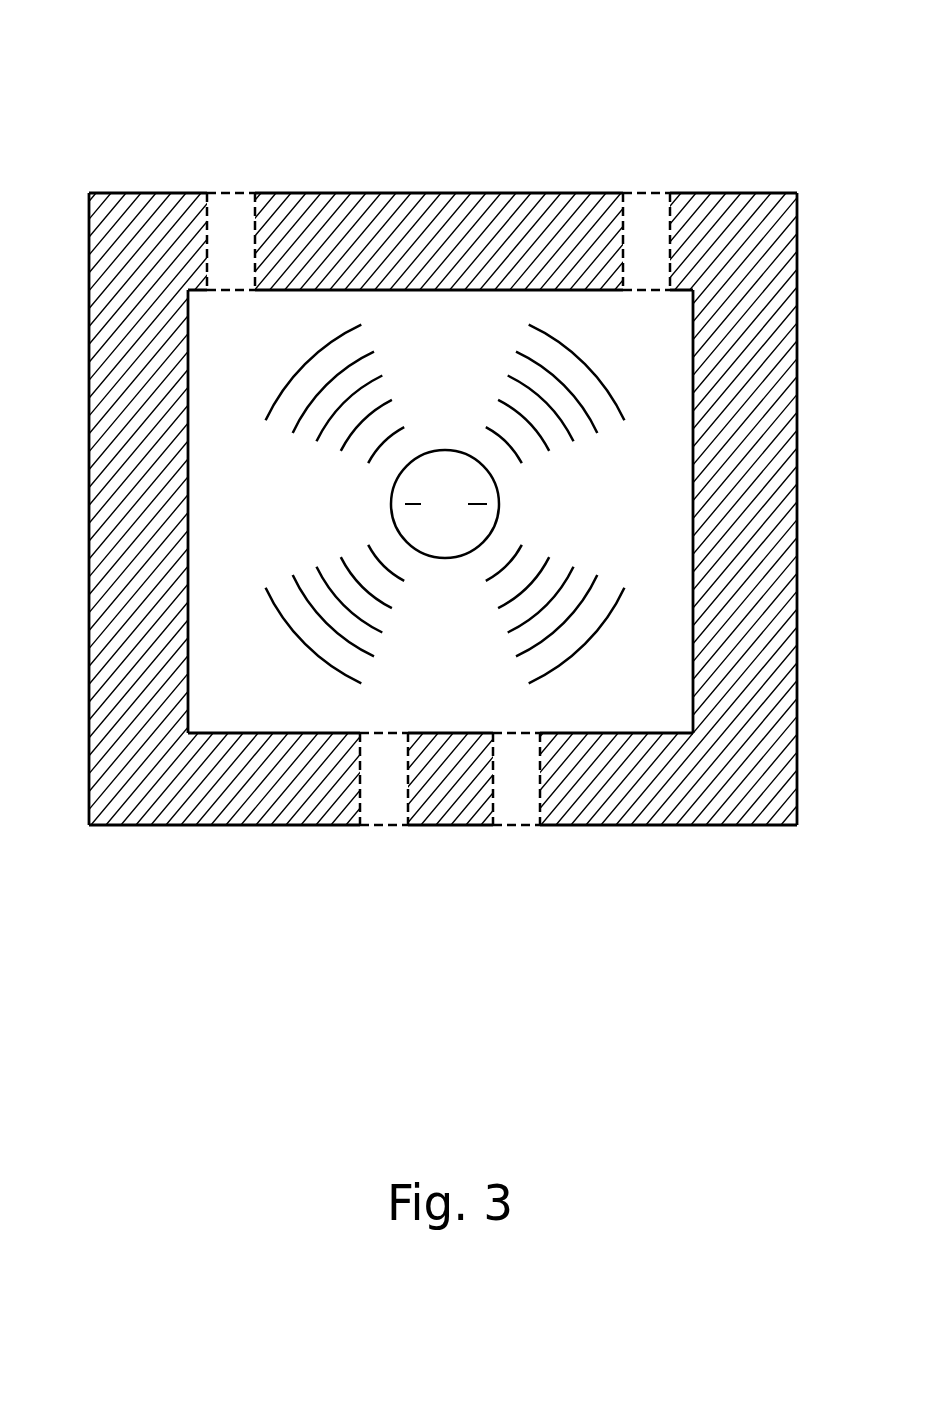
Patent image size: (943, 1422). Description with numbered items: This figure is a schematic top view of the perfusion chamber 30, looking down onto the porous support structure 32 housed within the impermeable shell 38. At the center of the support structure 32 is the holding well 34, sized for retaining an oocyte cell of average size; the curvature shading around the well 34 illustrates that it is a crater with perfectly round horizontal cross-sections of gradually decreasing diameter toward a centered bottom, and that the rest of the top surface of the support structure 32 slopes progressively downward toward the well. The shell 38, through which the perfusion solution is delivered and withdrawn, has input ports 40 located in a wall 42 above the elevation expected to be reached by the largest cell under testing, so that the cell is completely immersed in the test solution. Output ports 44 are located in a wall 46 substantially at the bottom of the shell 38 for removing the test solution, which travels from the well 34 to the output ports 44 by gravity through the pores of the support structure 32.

The perfusion chamber 30 is at (135, 96).
The porous support structure 32 is at (635, 485).
The holding well 34 is at (423, 452).
The impermeable shell 38 is at (743, 530).
The input ports 40 is at (232, 213).
The wall 42 is at (440, 225).
The output ports 44 is at (392, 808).
The wall 46 is at (447, 803).